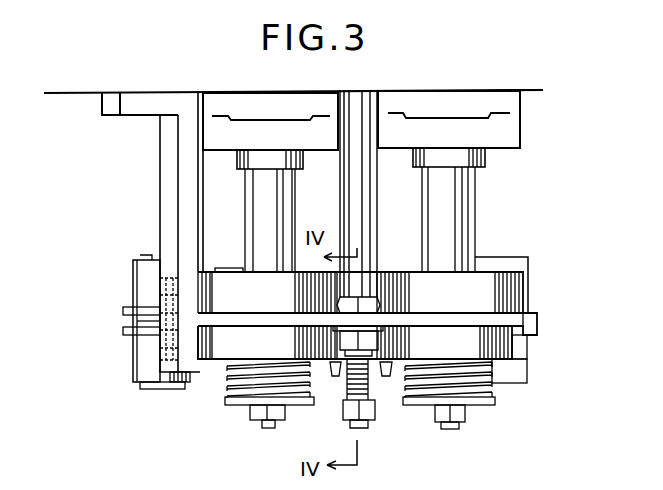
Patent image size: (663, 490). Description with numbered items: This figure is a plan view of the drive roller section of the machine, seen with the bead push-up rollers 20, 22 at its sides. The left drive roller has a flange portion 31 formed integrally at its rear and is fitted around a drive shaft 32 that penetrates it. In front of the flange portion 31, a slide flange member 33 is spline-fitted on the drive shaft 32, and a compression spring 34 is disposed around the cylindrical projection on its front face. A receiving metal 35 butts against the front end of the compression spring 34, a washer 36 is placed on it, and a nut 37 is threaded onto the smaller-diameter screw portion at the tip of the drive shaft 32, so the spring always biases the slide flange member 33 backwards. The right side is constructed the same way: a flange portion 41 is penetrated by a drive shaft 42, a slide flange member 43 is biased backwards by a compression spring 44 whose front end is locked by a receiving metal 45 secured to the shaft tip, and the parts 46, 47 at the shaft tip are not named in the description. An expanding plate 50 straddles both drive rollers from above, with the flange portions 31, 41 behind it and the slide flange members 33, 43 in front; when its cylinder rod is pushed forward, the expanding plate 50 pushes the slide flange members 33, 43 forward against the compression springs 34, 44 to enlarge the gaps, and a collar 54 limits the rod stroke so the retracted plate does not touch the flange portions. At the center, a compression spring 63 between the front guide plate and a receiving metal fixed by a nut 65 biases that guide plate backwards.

The bead push-up roller 20 is at (137, 321).
The bead push-up roller 22 is at (519, 340).
The flange portion 31 is at (236, 272).
The drive shaft 32 is at (262, 212).
The slide flange member 33 is at (200, 372).
The compression spring 34 is at (233, 368).
The receiving metal 35 is at (300, 405).
The washer 36 is at (252, 410).
The nut 37 is at (268, 428).
The flange portion 41 is at (500, 300).
The drive shaft 42 is at (445, 219).
The slide flange member 43 is at (522, 358).
The compression spring 44 is at (494, 390).
The receiving metal 45 is at (410, 405).
The nut 46 is at (458, 415).
The bolt end 47 is at (452, 429).
The expanding plate 50 is at (515, 318).
The collar 54 is at (355, 200).
The compression spring 63 is at (350, 390).
The nut 65 is at (360, 420).